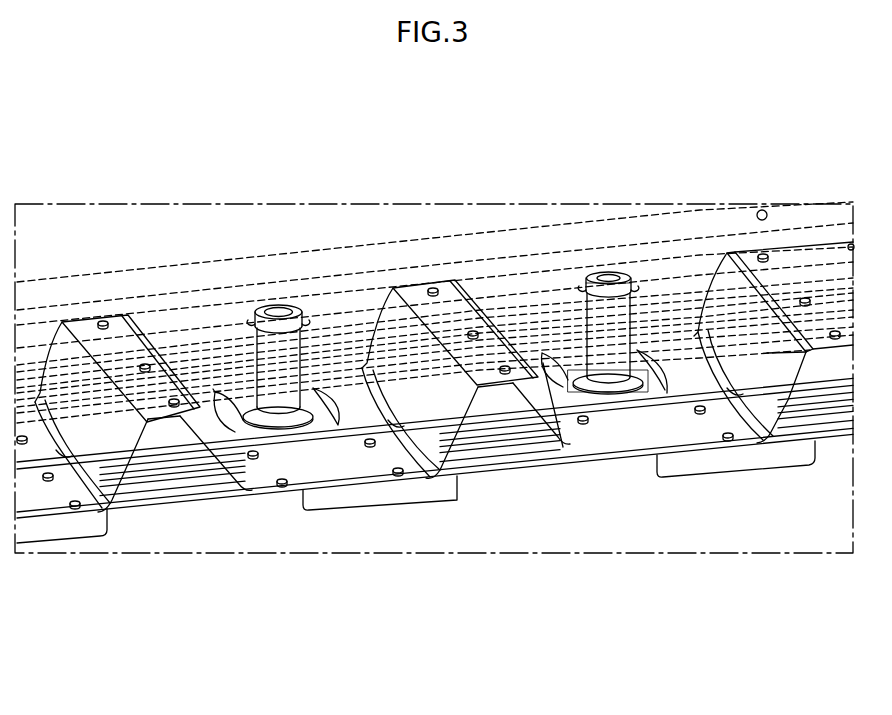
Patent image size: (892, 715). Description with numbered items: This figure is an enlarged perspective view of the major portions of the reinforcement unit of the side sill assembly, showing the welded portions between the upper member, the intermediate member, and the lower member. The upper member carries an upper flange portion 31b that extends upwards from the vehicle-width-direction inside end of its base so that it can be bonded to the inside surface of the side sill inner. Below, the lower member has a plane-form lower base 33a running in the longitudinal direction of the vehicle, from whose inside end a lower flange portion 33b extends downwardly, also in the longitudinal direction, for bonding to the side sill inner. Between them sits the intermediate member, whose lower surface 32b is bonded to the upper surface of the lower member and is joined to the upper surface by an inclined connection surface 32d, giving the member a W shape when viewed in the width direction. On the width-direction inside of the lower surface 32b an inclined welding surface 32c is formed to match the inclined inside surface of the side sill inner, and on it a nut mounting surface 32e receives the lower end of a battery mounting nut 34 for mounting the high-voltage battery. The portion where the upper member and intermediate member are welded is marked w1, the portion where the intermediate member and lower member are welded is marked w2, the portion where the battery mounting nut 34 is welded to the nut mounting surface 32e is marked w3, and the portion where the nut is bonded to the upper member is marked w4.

The upper flange portion 31b is at (486, 245).
The lower surface 32b is at (312, 472).
The welding surface 32c is at (358, 418).
The connection surface 32d is at (447, 416).
The nut mounting surface 32e is at (262, 412).
The lower base 33a is at (167, 502).
The lower flange portion 33b is at (390, 500).
The battery mounting nut 34 is at (617, 277).
The welded portion between upper member and intermediate member w1 is at (102, 320).
The welded portion between intermediate member and lower member w2 is at (398, 475).
The welded portion between battery mounting nut and nut mounting surface w3 is at (635, 388).
The bonded portion between battery mounting nut and upper member w4 is at (582, 284).